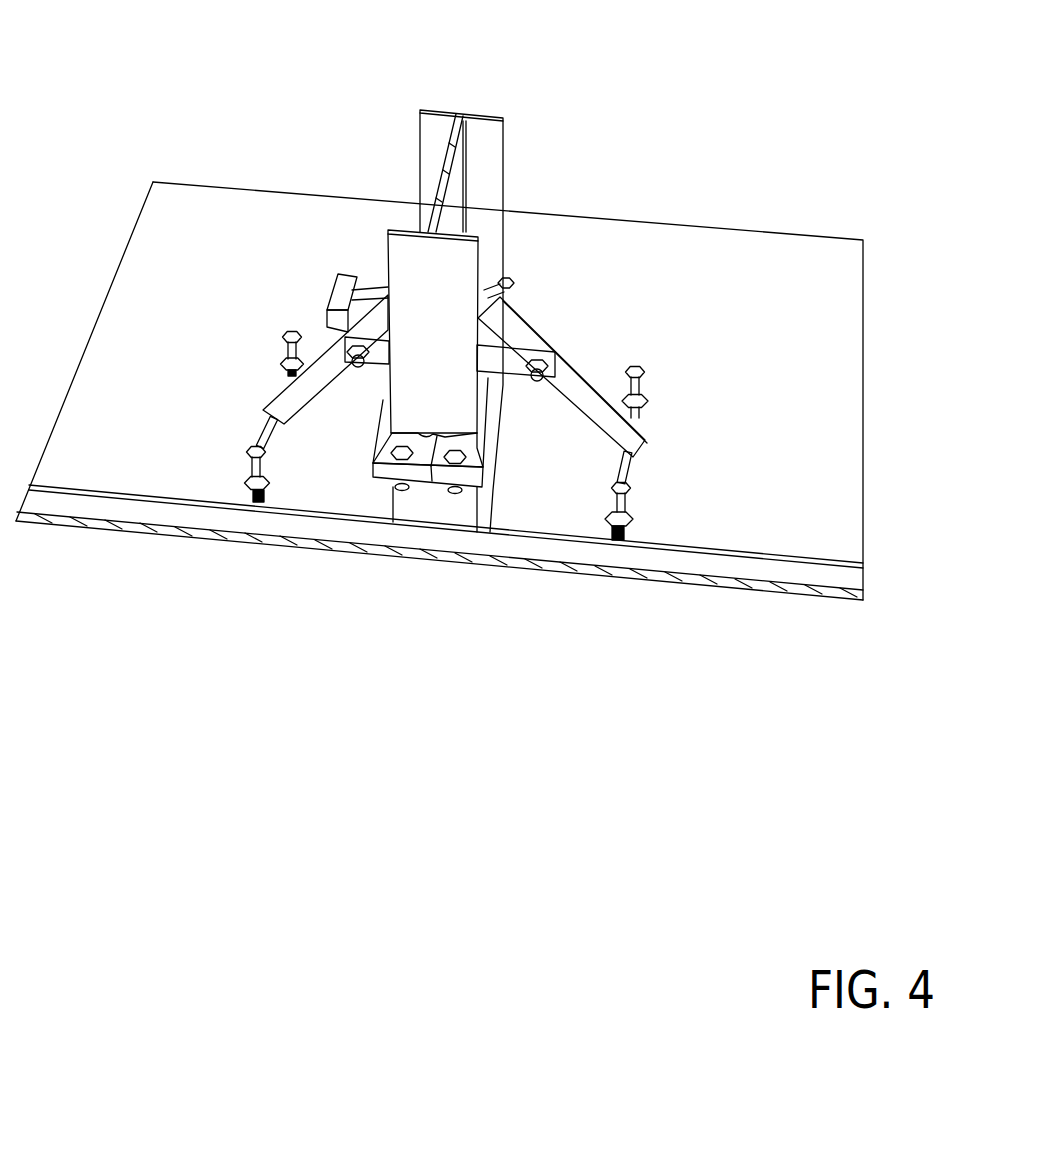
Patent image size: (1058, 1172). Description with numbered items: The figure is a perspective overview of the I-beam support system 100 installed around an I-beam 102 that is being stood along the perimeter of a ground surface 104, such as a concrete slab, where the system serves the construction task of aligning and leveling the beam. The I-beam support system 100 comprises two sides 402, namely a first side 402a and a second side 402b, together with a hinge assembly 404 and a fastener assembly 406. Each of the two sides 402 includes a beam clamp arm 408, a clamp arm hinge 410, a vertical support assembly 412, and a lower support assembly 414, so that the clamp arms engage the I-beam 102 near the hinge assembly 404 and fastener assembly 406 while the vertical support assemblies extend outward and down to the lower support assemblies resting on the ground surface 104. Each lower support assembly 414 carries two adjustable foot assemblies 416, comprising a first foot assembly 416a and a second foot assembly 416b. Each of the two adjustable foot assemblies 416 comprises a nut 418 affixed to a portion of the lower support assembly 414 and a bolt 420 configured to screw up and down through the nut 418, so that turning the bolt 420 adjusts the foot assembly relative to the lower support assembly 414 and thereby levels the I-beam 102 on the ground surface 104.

The I-beam support system 100 is at (285, 330).
The I-beam 102 is at (503, 118).
The ground surface 104 is at (773, 248).
The two sides 402 is at (362, 488).
The first side 402a is at (503, 423).
The second side 402b is at (373, 440).
The hinge assembly 404 is at (485, 478).
The fastener assembly 406 is at (338, 273).
The beam clamp arm 408 is at (498, 480).
The clamp arm hinge 410 is at (447, 492).
The vertical support assembly 412 is at (592, 395).
The lower support assembly 414 is at (628, 472).
The two adjustable foot assemblies 416 is at (731, 512).
The first foot assembly 416a is at (637, 378).
The second foot assembly 416b is at (631, 532).
The nut 418 is at (247, 478).
The bolt 420 is at (257, 445).